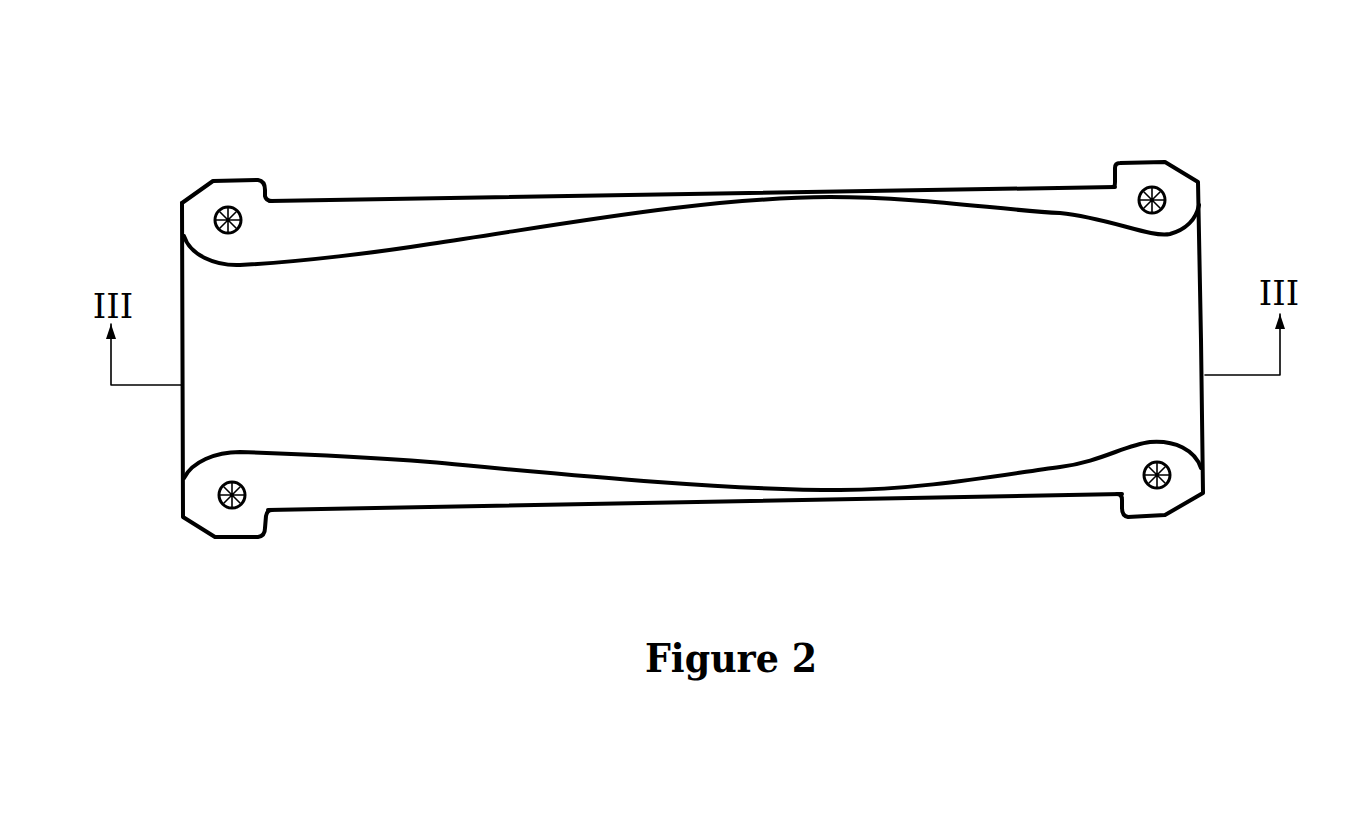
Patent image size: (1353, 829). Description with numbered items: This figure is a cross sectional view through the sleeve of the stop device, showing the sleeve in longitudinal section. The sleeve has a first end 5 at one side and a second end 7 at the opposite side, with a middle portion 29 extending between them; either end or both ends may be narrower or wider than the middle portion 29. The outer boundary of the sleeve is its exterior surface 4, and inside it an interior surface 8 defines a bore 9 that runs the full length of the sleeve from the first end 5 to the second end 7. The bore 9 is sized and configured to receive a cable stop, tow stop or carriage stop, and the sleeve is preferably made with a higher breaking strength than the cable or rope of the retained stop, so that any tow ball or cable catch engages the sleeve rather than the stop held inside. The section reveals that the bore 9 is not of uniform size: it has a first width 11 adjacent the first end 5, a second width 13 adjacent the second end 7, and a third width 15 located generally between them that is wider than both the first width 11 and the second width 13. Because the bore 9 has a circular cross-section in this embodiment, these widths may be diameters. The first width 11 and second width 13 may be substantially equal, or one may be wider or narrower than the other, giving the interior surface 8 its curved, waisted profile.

The middle portion 29 is at (701, 188).
The third width 15 is at (832, 273).
The interior surface 8 is at (993, 214).
The bore 9 is at (631, 333).
The second width 13 is at (203, 317).
The first width 11 is at (1184, 280).
The second end 7 is at (175, 443).
The first end 5 is at (1216, 426).
The exterior surface 4 is at (598, 513).